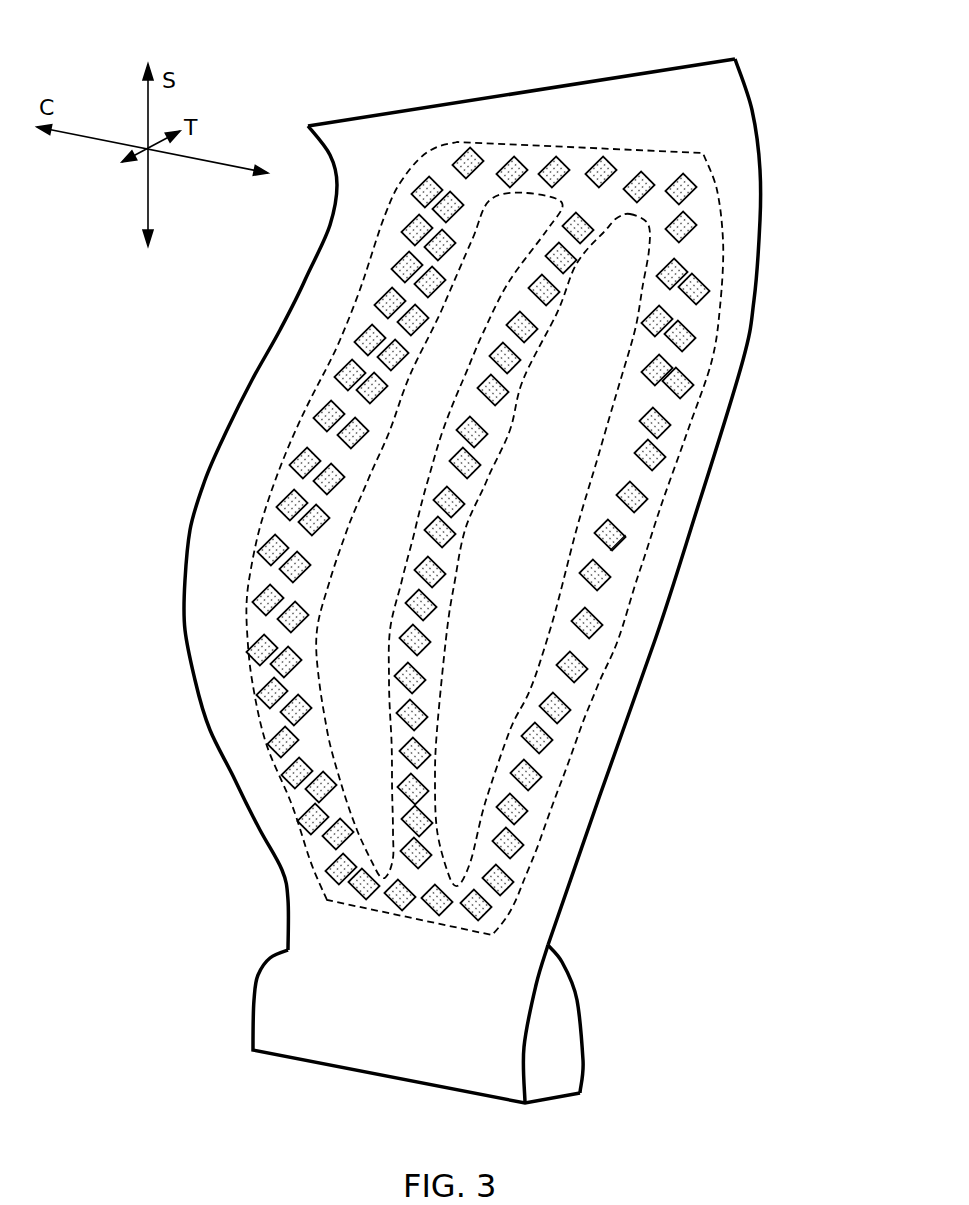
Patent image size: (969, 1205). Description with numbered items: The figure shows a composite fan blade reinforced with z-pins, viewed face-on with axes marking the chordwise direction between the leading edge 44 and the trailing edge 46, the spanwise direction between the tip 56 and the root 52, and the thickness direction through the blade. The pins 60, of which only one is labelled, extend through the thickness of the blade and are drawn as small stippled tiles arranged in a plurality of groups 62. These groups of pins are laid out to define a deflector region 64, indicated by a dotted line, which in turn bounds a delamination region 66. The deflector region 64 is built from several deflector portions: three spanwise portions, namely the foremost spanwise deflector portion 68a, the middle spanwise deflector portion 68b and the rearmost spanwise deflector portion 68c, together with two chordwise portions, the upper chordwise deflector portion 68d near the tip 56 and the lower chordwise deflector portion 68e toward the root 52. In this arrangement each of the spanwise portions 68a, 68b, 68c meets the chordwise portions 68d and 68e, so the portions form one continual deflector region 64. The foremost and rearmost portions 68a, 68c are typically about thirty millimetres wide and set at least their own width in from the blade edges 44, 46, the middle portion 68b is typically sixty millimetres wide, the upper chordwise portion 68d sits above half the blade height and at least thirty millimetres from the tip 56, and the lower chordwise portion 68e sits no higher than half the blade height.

The leading edge 44 is at (211, 473).
The trailing edge 46 is at (724, 428).
The root 52 is at (280, 1003).
The tip 56 is at (458, 102).
The pins 60 is at (616, 535).
The groups 62 is at (618, 549).
The deflector region 64 is at (316, 410).
The delamination region 66 is at (242, 540).
The foremost spanwise deflector portion 68a is at (281, 530).
The middle spanwise deflector portion 68b is at (430, 667).
The rearmost spanwise deflector portion 68c is at (625, 553).
The upper chordwise deflector portion 68d is at (585, 160).
The lower chordwise deflector portion 68e is at (437, 920).